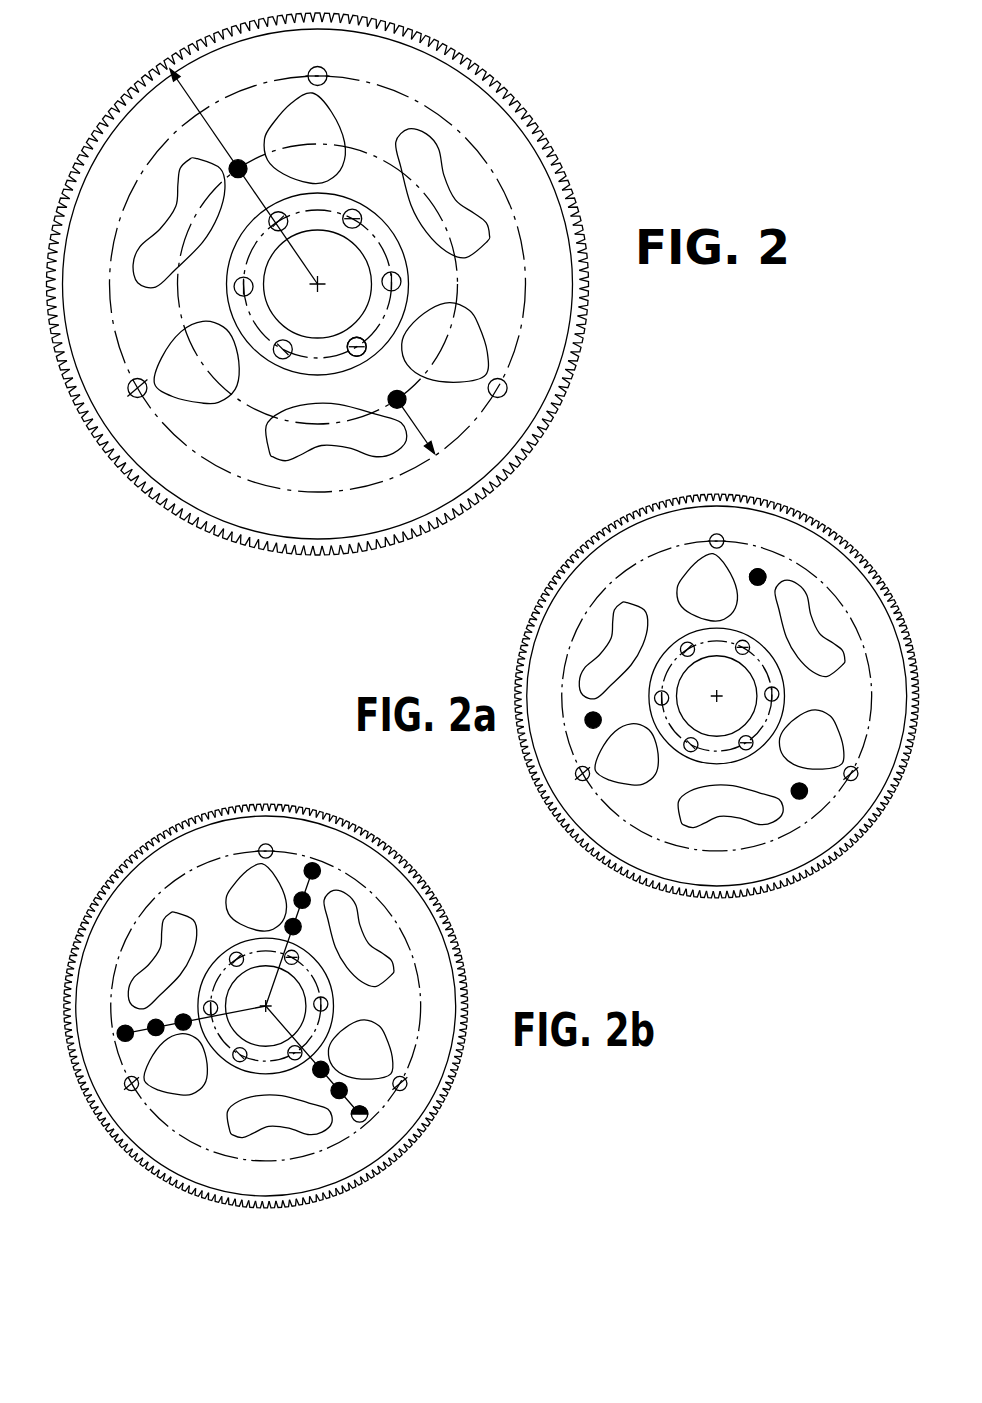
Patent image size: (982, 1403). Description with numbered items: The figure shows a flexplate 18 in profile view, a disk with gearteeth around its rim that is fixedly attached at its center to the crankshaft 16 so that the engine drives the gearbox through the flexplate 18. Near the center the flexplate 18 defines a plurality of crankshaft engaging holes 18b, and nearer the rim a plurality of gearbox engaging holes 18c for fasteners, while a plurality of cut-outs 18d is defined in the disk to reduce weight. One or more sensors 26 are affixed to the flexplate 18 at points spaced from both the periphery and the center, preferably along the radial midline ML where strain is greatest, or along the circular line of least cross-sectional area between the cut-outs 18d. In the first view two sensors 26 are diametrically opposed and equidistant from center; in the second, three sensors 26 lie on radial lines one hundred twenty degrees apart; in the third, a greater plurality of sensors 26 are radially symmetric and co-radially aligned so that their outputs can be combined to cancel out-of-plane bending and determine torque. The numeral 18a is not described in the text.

In FIG. 2, the crankshaft 16 is at (338, 324).
In FIG. 2, the flexplate 18 is at (563, 144).
In FIG. 2, the pilot circle 18a is at (538, 288).
In FIG. 2, the crankshaft engaging holes 18b is at (352, 346).
In FIG. 2, the gearbox engaging holes 18c is at (440, 450).
In FIG. 2, the cut-outs 18d is at (482, 218).
In FIG. 2, the sensor 26 is at (445, 456).
In FIG. 2b, the sensor 26 is at (312, 874).